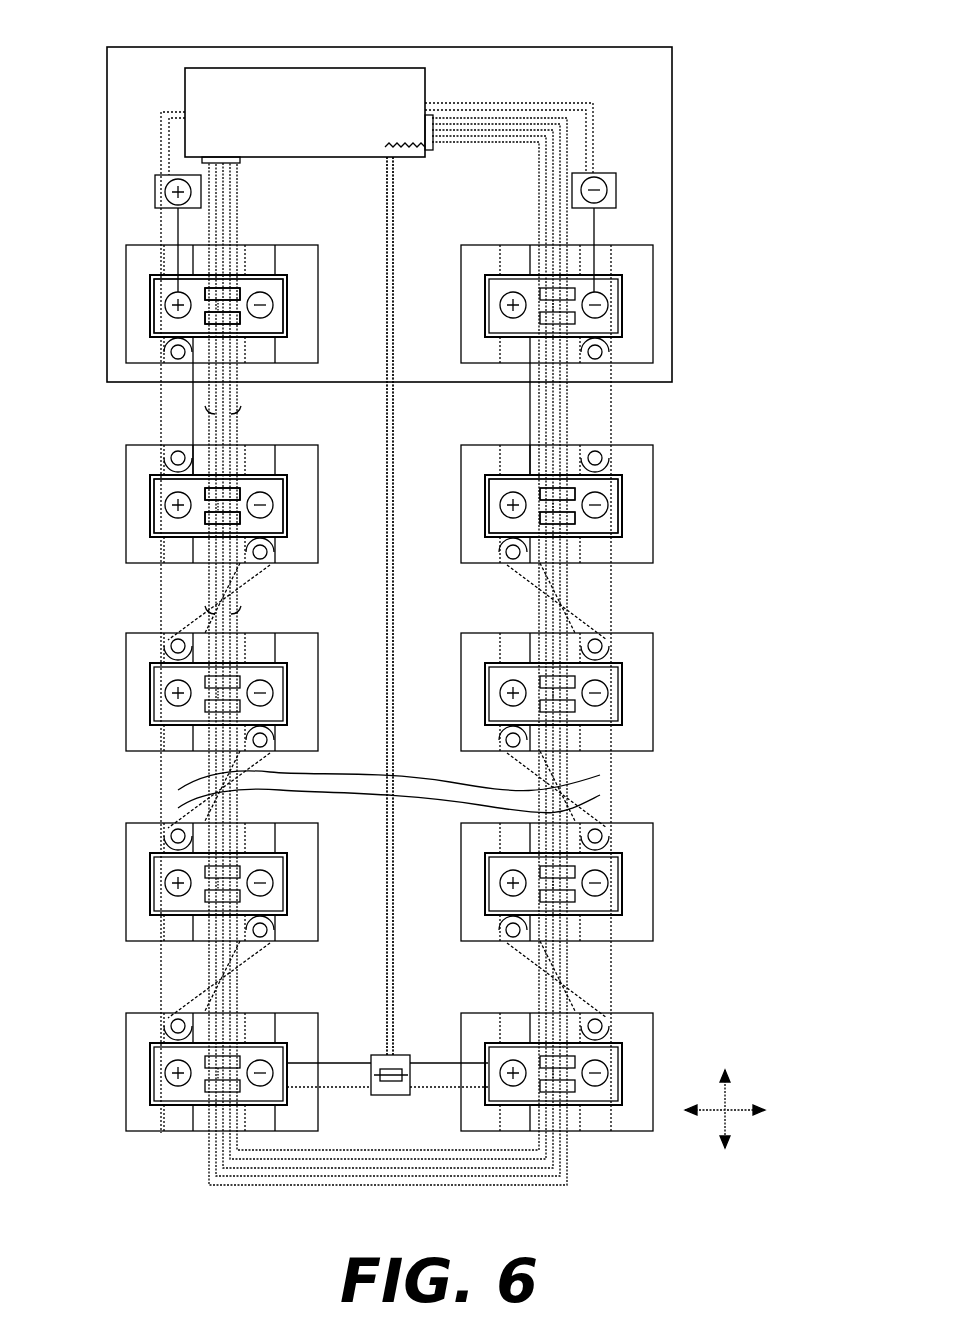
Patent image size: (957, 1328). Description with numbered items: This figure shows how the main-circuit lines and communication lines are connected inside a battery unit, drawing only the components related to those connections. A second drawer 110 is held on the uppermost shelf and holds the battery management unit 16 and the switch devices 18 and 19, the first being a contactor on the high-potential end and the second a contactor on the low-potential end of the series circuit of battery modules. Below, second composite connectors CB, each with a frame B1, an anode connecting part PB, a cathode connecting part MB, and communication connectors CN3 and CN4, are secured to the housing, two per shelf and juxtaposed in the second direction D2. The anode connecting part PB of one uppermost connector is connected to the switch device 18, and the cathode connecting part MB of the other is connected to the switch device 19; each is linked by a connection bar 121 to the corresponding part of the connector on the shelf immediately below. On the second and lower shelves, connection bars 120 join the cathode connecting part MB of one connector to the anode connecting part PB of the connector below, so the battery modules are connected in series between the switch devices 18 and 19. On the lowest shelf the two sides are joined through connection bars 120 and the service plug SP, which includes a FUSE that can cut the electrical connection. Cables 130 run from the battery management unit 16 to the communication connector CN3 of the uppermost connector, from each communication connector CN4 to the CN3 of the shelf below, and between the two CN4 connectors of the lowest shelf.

The battery management unit 16 is at (346, 68).
The switch device 18 is at (155, 191).
The switch device 19 is at (616, 190).
The second drawer 110 is at (672, 297).
The connection bar 120 is at (257, 578).
The connection bar 121 is at (164, 405).
The cable 130 is at (238, 418).
The second composite connector CB is at (290, 291).
The anode connecting part PB is at (150, 288).
The frame B1 is at (150, 337).
The cathode connecting part MB is at (240, 318).
The communication connector CN3 is at (240, 292).
The communication connector CN4 is at (240, 328).
The service plug SP is at (405, 1055).
The fuse FUSE is at (387, 1089).
The second direction D2 is at (742, 1110).